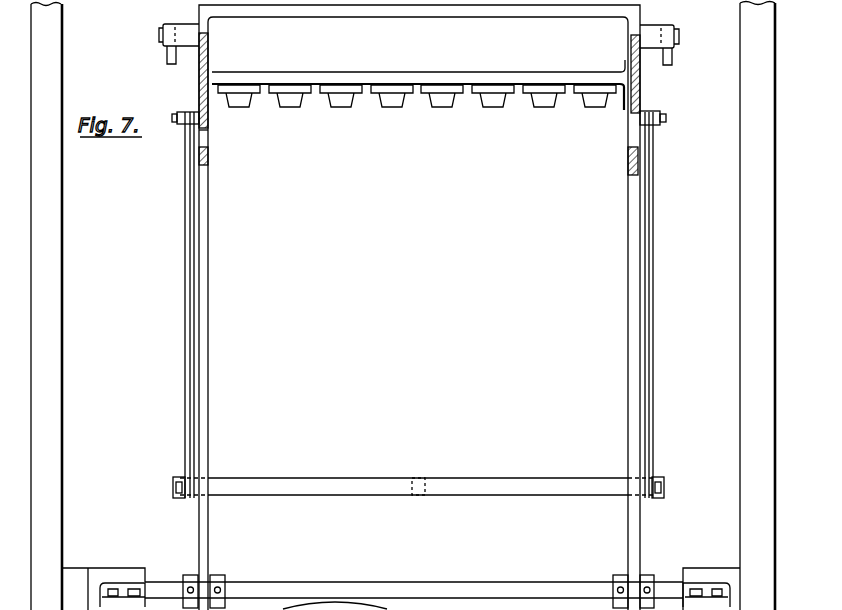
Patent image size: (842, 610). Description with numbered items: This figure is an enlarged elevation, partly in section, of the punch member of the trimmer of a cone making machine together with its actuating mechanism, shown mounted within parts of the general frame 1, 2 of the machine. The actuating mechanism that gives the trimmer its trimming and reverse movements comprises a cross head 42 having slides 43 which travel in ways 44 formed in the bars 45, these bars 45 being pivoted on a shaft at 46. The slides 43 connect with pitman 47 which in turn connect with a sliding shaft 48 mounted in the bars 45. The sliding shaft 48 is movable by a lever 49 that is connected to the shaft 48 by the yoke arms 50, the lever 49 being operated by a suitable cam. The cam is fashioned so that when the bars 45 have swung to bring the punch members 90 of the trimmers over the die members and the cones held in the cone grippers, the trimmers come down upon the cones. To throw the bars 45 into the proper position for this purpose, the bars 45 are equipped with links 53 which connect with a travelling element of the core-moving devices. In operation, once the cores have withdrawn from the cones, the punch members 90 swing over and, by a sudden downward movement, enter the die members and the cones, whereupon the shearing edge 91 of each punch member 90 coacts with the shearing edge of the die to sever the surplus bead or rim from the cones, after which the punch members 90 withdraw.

The general frame 1 is at (104, 575).
The general frame 2 is at (742, 402).
The cross head 42 is at (335, 72).
The slides 43 is at (210, 66).
The ways 44 is at (199, 78).
The bars 45 is at (207, 186).
The shaft 46 is at (281, 583).
The pitman 47 is at (187, 267).
The sliding shaft 48 is at (297, 483).
The lever 49 is at (424, 478).
The yoke arms 50 is at (176, 478).
The links 53 is at (161, 32).
The punch members 90 is at (440, 102).
The shearing edge 91 is at (290, 100).